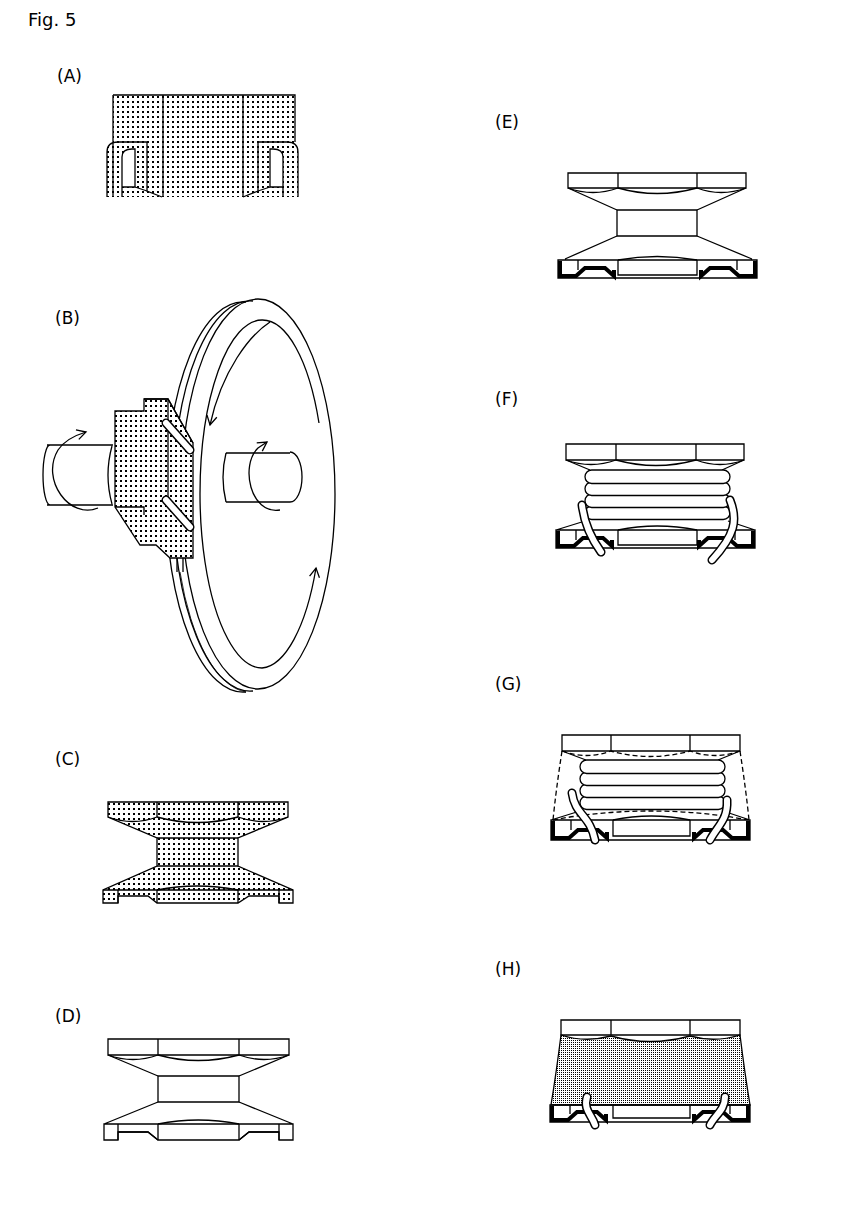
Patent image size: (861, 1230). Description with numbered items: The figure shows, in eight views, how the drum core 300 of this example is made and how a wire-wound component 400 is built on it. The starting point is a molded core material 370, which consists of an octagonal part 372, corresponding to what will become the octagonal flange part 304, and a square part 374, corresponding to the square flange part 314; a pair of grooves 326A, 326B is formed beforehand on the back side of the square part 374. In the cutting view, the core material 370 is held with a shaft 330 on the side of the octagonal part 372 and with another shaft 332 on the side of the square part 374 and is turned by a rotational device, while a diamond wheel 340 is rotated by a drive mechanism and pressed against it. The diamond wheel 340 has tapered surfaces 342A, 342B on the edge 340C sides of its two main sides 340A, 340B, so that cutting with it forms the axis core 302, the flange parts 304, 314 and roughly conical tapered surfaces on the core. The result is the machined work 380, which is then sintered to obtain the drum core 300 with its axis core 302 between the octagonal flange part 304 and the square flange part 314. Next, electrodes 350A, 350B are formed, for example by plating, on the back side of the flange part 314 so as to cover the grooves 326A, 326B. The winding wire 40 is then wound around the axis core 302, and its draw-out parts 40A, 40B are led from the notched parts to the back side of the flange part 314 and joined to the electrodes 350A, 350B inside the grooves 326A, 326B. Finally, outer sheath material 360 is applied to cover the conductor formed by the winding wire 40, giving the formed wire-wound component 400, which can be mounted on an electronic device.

The winding wire 40 is at (737, 506).
The draw-out part 40A is at (722, 568).
The draw-out part 40B is at (603, 560).
The drum core 300 is at (335, 993).
The axis core 302 is at (242, 1088).
The octagonal flange part 304 is at (298, 1044).
The square flange part 314 is at (305, 1129).
The groove 326A is at (193, 450).
The groove 326B is at (190, 528).
The shaft 330 is at (50, 445).
The shaft 332 is at (287, 505).
The diamond wheel 340 is at (245, 479).
The main side 340A is at (262, 345).
The main side 340B is at (222, 334).
The edge 340C is at (190, 607).
The tapered surface 342A is at (210, 623).
The tapered surface 342B is at (178, 576).
The electrode 350A is at (718, 276).
The electrode 350B is at (598, 276).
The outer sheath material 360 is at (562, 778).
The core material 370 is at (231, 343).
The octagonal part 372 is at (297, 119).
The square part 374 is at (298, 175).
The machined work 380 is at (302, 797).
The wire-wound component 400 is at (780, 983).